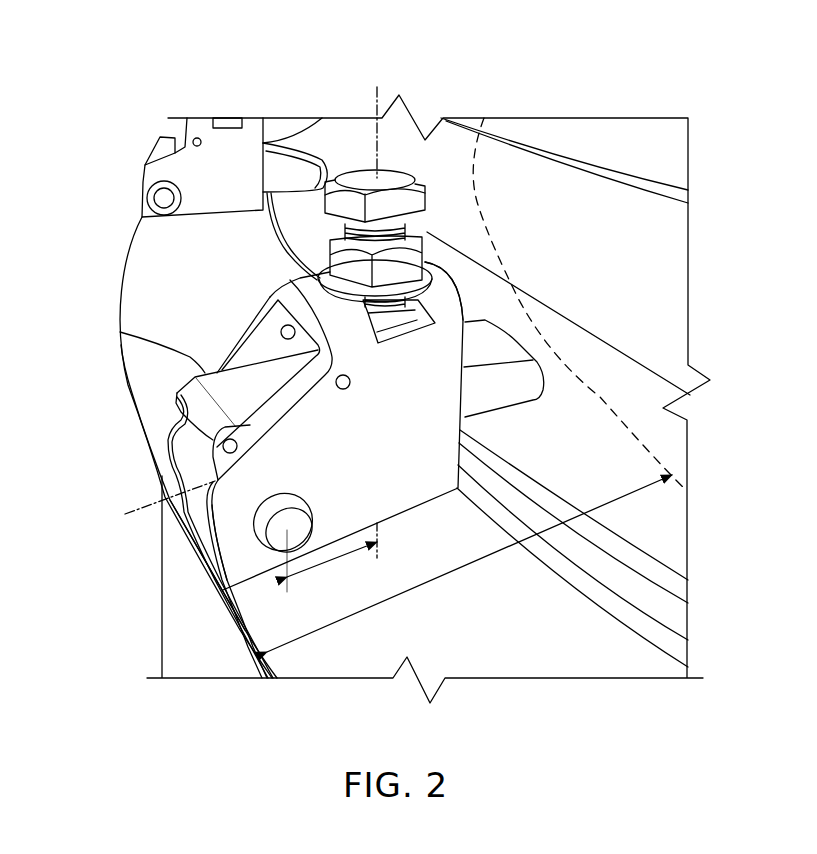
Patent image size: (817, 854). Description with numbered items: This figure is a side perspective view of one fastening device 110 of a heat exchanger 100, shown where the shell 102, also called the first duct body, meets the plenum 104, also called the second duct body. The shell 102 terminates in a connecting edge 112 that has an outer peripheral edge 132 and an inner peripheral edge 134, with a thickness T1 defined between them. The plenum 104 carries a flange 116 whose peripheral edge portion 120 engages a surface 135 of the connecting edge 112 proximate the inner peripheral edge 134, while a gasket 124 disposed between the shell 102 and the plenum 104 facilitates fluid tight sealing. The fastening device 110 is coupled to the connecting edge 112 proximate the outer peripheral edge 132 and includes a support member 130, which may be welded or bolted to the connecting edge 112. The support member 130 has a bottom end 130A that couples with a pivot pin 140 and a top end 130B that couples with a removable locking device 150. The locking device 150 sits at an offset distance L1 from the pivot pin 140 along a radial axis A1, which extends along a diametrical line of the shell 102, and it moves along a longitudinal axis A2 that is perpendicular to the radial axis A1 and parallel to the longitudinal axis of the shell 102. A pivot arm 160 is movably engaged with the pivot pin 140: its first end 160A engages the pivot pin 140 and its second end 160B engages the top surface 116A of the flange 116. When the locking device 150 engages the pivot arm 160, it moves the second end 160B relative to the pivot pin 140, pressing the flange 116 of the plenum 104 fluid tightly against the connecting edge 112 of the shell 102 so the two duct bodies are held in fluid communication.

The heat exchanger 100 is at (608, 97).
The shell 102 is at (160, 605).
The plenum 104 is at (668, 190).
The fastening device 110 is at (153, 262).
The connecting edge 112 is at (255, 613).
The flange 116 is at (665, 530).
The top surface 116A is at (617, 457).
The peripheral edge portion 120 is at (647, 568).
The gasket 124 is at (673, 615).
The support member 130 is at (417, 443).
The bottom end 130A is at (247, 593).
The top end 130B is at (455, 278).
The outer peripheral edge 132 is at (245, 600).
The inner peripheral edge 134 is at (620, 430).
The surface 135 is at (520, 645).
The pivot pin 140 is at (252, 580).
The locking device 150 is at (402, 163).
The pivot arm 160 is at (122, 333).
The first end 160A is at (168, 383).
The second end 160B is at (517, 333).
The radial axis A1 is at (147, 500).
The longitudinal axis A2 is at (377, 108).
The offset distance L1 is at (333, 557).
The thickness T1 is at (360, 613).